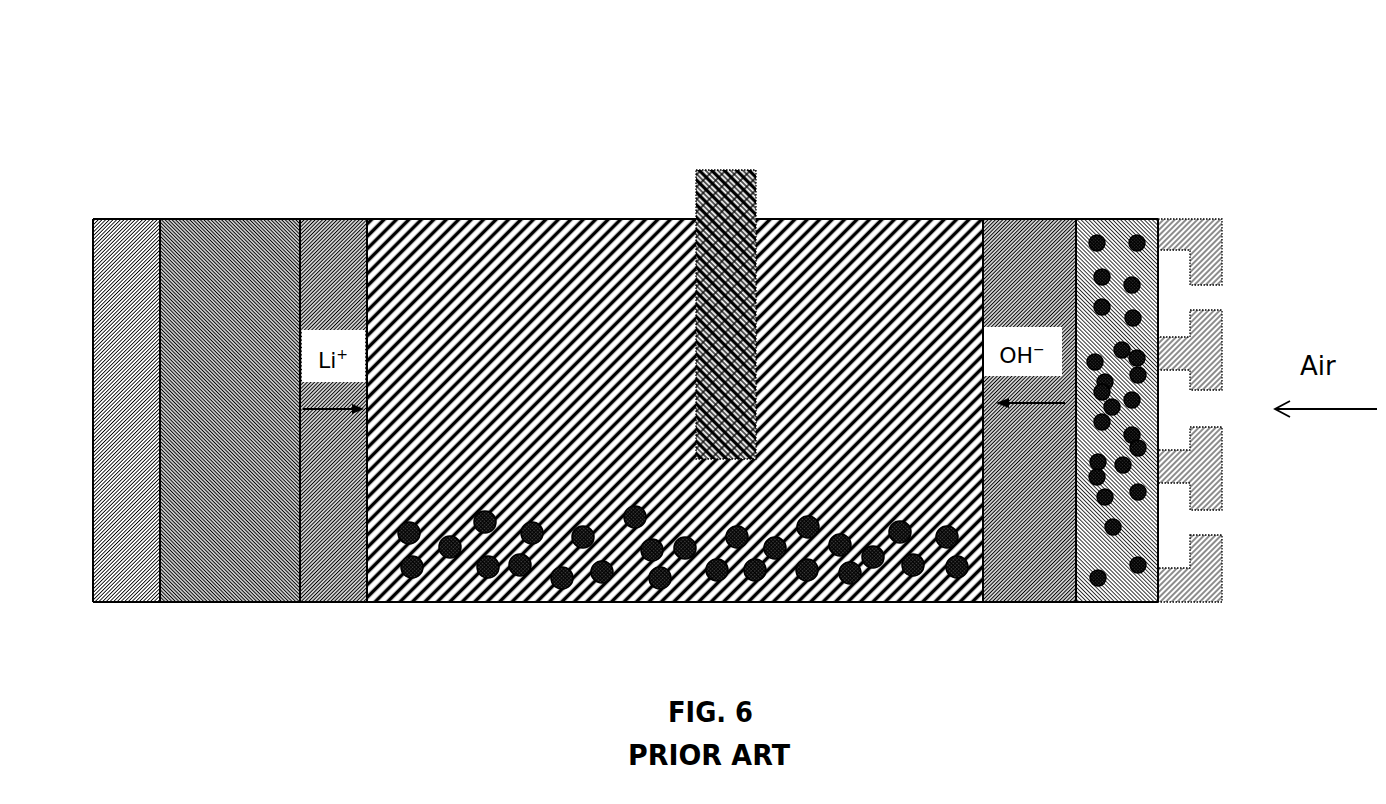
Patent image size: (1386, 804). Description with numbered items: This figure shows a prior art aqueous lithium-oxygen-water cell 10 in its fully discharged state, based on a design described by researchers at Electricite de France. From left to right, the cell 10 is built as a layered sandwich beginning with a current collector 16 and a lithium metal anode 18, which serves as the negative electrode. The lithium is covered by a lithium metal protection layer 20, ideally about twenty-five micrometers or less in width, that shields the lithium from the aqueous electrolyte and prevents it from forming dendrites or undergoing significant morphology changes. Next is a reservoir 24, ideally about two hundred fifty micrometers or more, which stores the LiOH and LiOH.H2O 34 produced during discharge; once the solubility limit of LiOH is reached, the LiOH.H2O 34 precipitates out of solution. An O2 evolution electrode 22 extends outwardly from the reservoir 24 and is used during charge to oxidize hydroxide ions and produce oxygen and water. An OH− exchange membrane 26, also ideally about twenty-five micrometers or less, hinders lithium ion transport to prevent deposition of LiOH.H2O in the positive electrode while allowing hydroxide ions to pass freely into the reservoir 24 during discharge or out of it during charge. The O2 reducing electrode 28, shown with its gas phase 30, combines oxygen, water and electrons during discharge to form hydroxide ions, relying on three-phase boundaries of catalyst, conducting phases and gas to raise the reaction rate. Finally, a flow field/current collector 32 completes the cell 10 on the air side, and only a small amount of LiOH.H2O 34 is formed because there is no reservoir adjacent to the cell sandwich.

The aqueous Li/O2—H2O cell 10 is at (393, 84).
The current collector 16 is at (127, 219).
The lithium metal anode 18 is at (262, 219).
The lithium metal protection layer 20 is at (357, 219).
The O2 evolution electrode 22 is at (732, 170).
The reservoir 24 is at (632, 219).
The OH− exchange membrane 26 is at (1013, 219).
The O2 reducing electrode 28 is at (1126, 219).
The gas phase 30 is at (1095, 238).
The flow field/current collector 32 is at (1217, 219).
The LiOH.H2O 34 is at (488, 572).